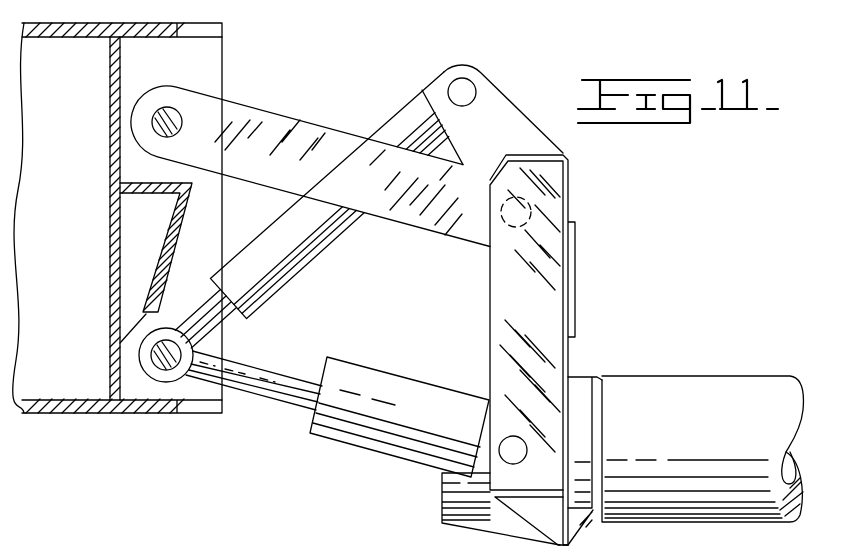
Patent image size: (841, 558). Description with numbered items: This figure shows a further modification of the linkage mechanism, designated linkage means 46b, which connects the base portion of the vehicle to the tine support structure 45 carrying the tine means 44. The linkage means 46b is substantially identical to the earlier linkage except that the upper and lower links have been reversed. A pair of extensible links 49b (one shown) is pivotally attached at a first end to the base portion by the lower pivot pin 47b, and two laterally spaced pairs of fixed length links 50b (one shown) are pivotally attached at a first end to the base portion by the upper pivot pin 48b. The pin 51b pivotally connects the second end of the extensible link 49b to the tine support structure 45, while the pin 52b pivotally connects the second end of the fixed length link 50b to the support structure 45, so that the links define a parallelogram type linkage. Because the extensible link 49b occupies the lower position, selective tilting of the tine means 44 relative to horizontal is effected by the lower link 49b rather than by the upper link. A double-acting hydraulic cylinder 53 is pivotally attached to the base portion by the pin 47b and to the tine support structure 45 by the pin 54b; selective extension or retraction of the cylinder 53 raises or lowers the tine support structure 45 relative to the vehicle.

The tine means 44 is at (717, 447).
The tine support structure 45 is at (542, 313).
The linkage means 46b is at (377, 70).
The lower pivot pin 47b is at (153, 356).
The upper pivot pin 48b is at (165, 107).
The extensible link 49b is at (366, 382).
The fixed length link 50b is at (335, 135).
The pivot pin 51b is at (504, 440).
The pivot pin 52b is at (531, 211).
The double-acting hydraulic cylinder 53 is at (285, 262).
The pivot pin 54b is at (470, 84).